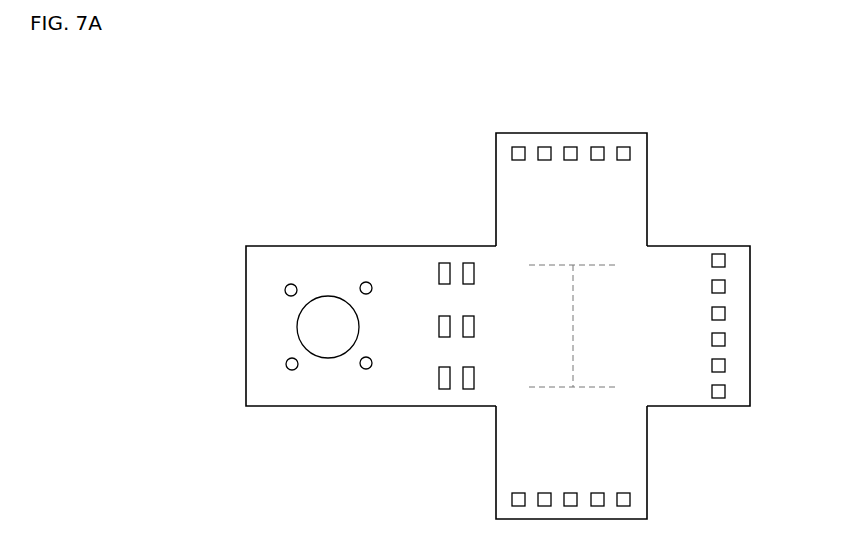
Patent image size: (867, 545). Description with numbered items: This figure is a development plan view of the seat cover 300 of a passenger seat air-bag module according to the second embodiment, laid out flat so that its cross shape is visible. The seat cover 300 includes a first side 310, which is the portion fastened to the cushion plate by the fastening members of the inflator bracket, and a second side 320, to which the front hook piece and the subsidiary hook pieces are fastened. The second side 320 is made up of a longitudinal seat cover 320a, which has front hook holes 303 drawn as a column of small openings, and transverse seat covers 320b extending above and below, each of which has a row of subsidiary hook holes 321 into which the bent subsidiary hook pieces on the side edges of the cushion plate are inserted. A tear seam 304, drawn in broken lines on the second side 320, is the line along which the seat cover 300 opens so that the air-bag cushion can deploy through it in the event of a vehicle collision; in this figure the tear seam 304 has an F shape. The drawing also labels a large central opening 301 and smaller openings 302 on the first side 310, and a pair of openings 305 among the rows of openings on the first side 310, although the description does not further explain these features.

The seat cover 300 is at (393, 237).
The center hole 301 is at (299, 330).
The mounting holes 302 is at (284, 370).
The front hook holes 303 is at (726, 288).
The tear seam 304 is at (595, 388).
The terminal pads 305 is at (468, 390).
The first side 310 is at (456, 255).
The second side 320 is at (711, 168).
The longitudinal seat cover 320a is at (675, 262).
The transverse seat covers 320b is at (622, 208).
The subsidiary hook holes 321 is at (573, 150).